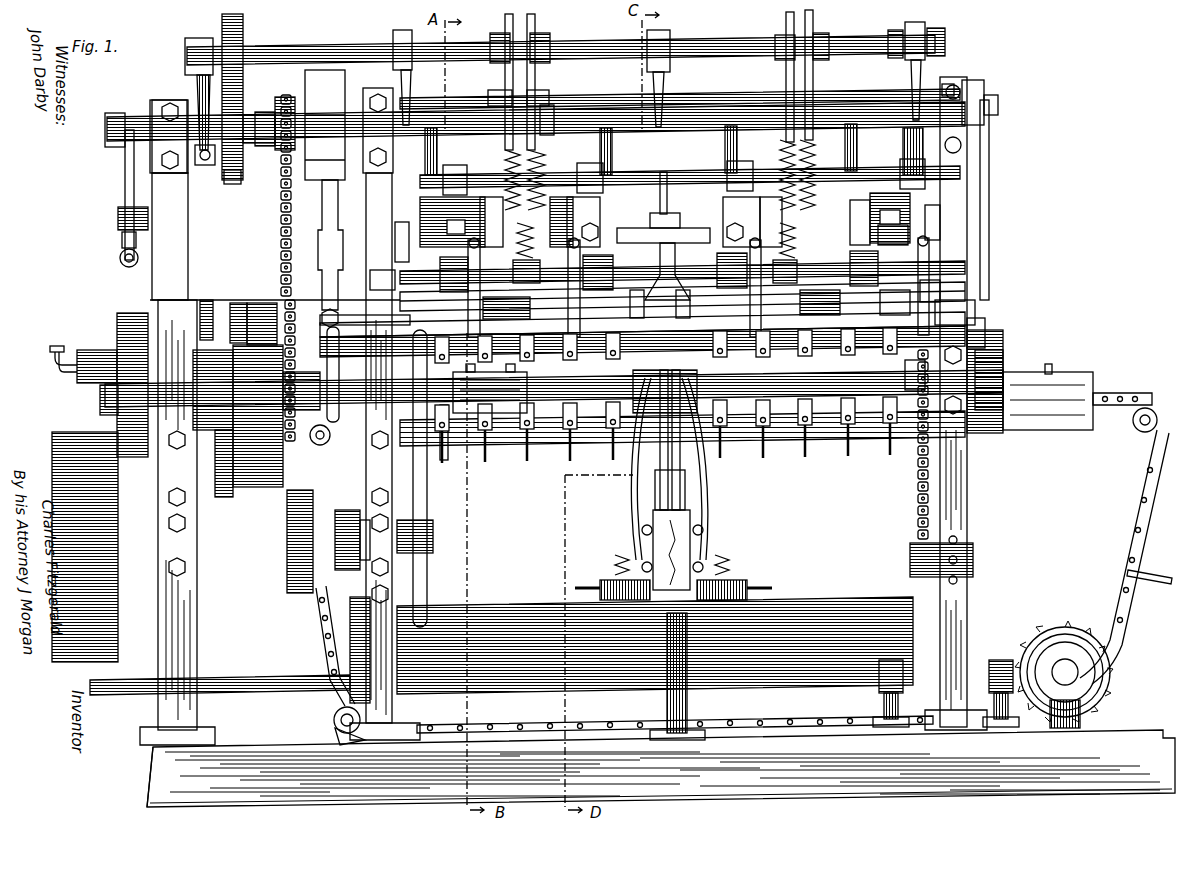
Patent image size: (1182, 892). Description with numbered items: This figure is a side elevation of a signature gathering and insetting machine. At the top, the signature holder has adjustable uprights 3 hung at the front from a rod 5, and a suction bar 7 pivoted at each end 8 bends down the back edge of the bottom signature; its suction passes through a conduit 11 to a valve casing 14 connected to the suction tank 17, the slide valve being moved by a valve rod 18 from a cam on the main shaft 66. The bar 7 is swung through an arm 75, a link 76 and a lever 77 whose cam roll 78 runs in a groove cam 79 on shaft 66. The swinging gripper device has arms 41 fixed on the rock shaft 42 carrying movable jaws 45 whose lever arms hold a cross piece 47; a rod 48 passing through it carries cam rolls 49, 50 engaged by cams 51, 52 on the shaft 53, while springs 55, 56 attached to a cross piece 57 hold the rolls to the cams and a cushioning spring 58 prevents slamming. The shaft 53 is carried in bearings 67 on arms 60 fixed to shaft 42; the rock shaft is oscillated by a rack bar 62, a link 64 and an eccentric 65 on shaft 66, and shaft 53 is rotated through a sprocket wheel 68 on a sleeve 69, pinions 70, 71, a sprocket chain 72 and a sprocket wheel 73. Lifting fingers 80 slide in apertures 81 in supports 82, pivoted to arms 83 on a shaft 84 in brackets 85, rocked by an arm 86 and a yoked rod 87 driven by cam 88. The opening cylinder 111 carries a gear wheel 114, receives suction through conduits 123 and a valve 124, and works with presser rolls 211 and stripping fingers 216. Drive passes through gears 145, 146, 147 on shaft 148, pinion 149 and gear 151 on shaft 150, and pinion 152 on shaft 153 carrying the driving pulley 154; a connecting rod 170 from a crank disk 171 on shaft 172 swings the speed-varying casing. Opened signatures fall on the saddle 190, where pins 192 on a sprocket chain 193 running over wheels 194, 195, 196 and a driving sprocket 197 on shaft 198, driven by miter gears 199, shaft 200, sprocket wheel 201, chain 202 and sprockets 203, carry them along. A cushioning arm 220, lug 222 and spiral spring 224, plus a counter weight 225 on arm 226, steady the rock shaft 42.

The uprights 3 is at (635, 149).
The rod 5 is at (700, 180).
The bar 7 is at (712, 252).
The pivot 8 is at (395, 230).
The conduit 11 is at (669, 304).
The valve casing 14 is at (690, 540).
The suction tank 17 is at (790, 600).
The valve rod 18 is at (685, 475).
The arms 41 is at (735, 112).
The rock shaft 42 is at (105, 130).
The movable jaws 45 is at (820, 302).
The cross piece 47 is at (506, 308).
The rod 48 is at (552, 108).
The cam roll 49 is at (497, 96).
The cam roll 50 is at (545, 93).
The cam 51 is at (506, 22).
The cam 52 is at (535, 22).
The shaft 53 is at (280, 55).
The spring 55 is at (505, 165).
The spring 56 is at (546, 165).
The cross piece 57 is at (674, 234).
The cushioning spring 58 is at (513, 268).
The arms 60 is at (198, 100).
The rack bar 62 is at (312, 80).
The link 64 is at (325, 230).
The eccentric 65 is at (320, 322).
The shaft 66 is at (100, 400).
The bearings 67 is at (200, 38).
The sprocket wheel 68 is at (282, 97).
The sleeve 69 is at (262, 115).
The pinion 70 is at (235, 182).
The pinion 71 is at (243, 32).
The sprocket chain 72 is at (280, 220).
The sprocket wheel 73 is at (296, 380).
The arm 75 is at (985, 92).
The link 76 is at (989, 180).
The lever 77 is at (985, 332).
The cam roll 78 is at (1003, 345).
The groove cam 79 is at (1003, 362).
The lifting fingers 80 is at (580, 250).
The apertures 81 is at (745, 232).
The supports 82 is at (675, 221).
The arms 83 is at (560, 322).
The shaft 84 is at (897, 302).
The brackets 85 is at (975, 310).
The arm 86 is at (373, 307).
The yoked rod 87 is at (448, 455).
The cam 88 is at (425, 450).
The cylinder 111 is at (598, 370).
The gear wheel 114 is at (385, 285).
The conduit 123 is at (638, 510).
The valve 124 is at (612, 580).
The gear 145 is at (117, 330).
The gear 146 is at (100, 400).
The gear 147 is at (213, 300).
The shaft 148 is at (100, 365).
The pinion 149 is at (190, 490).
The shaft 150 is at (255, 487).
The gear 151 is at (290, 520).
The pinion 152 is at (335, 545).
The shaft 153 is at (300, 585).
The driving pulley 154 is at (60, 475).
The connecting rod 170 is at (258, 303).
The crank disk 171 is at (238, 303).
The shaft 172 is at (72, 378).
The saddle 190 is at (533, 430).
The pins 192 is at (1050, 366).
The sprocket chain 193 is at (318, 600).
The sprocket bearing wheel 194 is at (1135, 430).
The sprocket bearing wheel 195 is at (325, 445).
The sprocket bearing wheel 196 is at (334, 728).
The driving sprocket 197 is at (1085, 640).
The shaft 198 is at (1068, 672).
The miter gears 199 is at (1060, 648).
The shaft 200 is at (990, 650).
The sprocket wheel 201 is at (885, 700).
The sprocket chain 202 is at (915, 490).
The sprocket wheels 203 is at (912, 395).
The presser rolls 211 is at (900, 258).
The fingers 216 is at (613, 455).
The arm 220 is at (125, 180).
The lug 222 is at (122, 212).
The spiral spring 224 is at (124, 242).
The counter weight 225 is at (910, 236).
The arm 226 is at (925, 155).